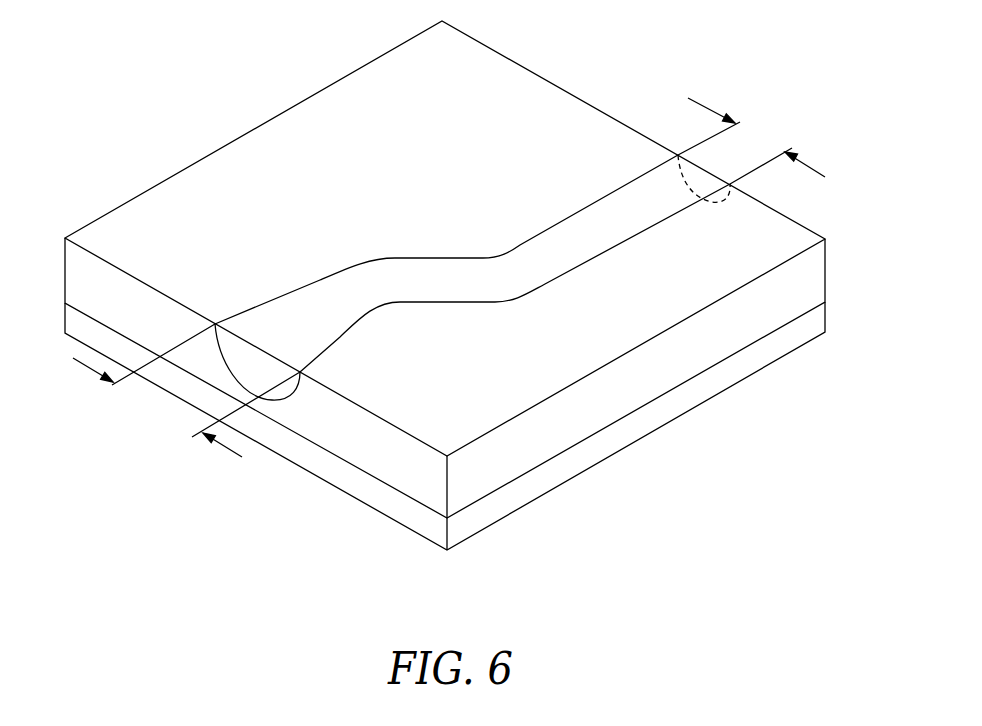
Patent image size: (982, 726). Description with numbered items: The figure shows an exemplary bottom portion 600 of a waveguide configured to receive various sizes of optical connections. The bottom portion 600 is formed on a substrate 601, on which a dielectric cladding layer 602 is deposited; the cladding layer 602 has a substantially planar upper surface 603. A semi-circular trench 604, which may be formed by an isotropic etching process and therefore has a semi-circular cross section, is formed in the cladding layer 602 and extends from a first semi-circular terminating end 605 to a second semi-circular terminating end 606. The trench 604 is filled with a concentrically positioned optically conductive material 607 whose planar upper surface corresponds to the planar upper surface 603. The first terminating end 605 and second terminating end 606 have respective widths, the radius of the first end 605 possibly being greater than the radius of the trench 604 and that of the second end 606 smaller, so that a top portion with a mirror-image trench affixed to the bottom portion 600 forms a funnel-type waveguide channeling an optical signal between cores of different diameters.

The bottom portion 600 is at (481, 285).
The substrate 601 is at (823, 327).
The dielectric cladding layer 602 is at (495, 269).
The planar upper surface 603 is at (366, 165).
The semi-circular trench 604 is at (573, 213).
The first semi-circular terminating end 605 is at (115, 435).
The second semi-circular terminating end 606 is at (790, 123).
The optically conductive material 607 is at (480, 285).